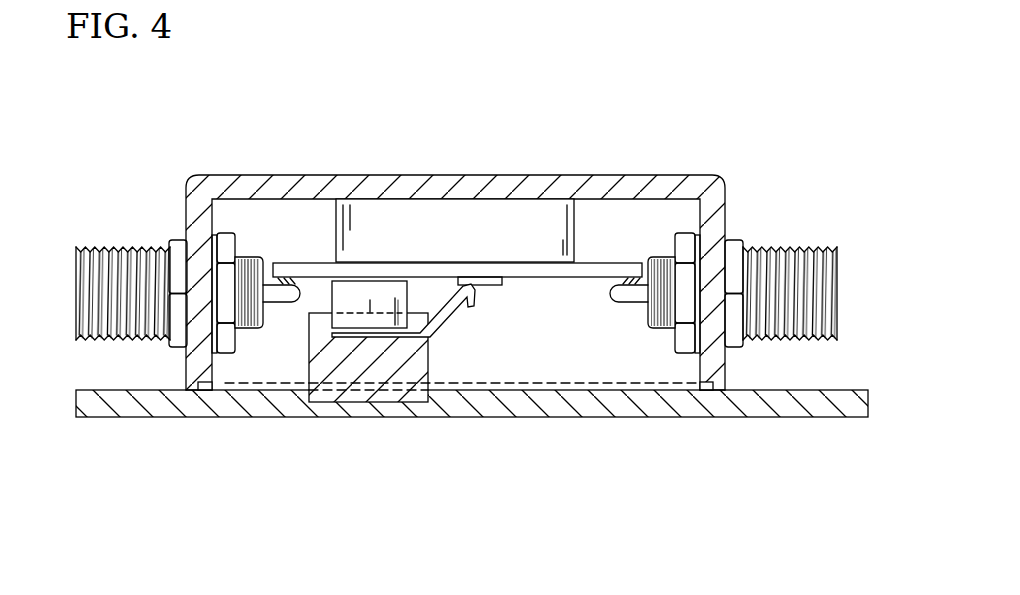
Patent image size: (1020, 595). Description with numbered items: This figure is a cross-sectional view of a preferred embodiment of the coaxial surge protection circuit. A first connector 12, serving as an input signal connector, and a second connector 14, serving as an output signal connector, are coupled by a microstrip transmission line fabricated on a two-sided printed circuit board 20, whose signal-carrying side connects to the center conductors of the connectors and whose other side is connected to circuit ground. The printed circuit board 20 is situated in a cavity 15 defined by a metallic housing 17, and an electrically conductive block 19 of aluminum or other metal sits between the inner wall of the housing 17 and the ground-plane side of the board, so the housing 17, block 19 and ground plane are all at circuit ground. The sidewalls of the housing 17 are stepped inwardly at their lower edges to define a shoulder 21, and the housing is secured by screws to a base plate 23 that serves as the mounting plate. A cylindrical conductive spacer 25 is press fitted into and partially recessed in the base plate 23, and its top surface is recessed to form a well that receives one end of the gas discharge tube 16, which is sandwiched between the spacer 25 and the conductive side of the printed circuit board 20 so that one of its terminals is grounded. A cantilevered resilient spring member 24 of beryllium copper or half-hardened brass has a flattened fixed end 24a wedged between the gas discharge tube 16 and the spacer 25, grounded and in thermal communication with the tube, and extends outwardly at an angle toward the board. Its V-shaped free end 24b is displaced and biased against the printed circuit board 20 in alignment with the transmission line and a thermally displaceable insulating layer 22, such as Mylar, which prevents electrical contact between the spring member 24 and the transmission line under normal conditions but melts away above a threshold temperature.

The first connector 12 is at (80, 276).
The second connector 14 is at (838, 280).
The cavity 15 is at (257, 225).
The gas discharge tube 16 is at (332, 300).
The housing 17 is at (363, 175).
The electrically conductive block 19 is at (519, 225).
The printed circuit board 20 is at (577, 270).
The shoulder 21 is at (223, 388).
The thermally displaceable insulating layer 22 is at (487, 287).
The base plate 23 is at (703, 417).
The spring member 24 is at (445, 316).
The fixed end 24a is at (368, 337).
The free end 24b is at (475, 303).
The spacer 25 is at (309, 360).